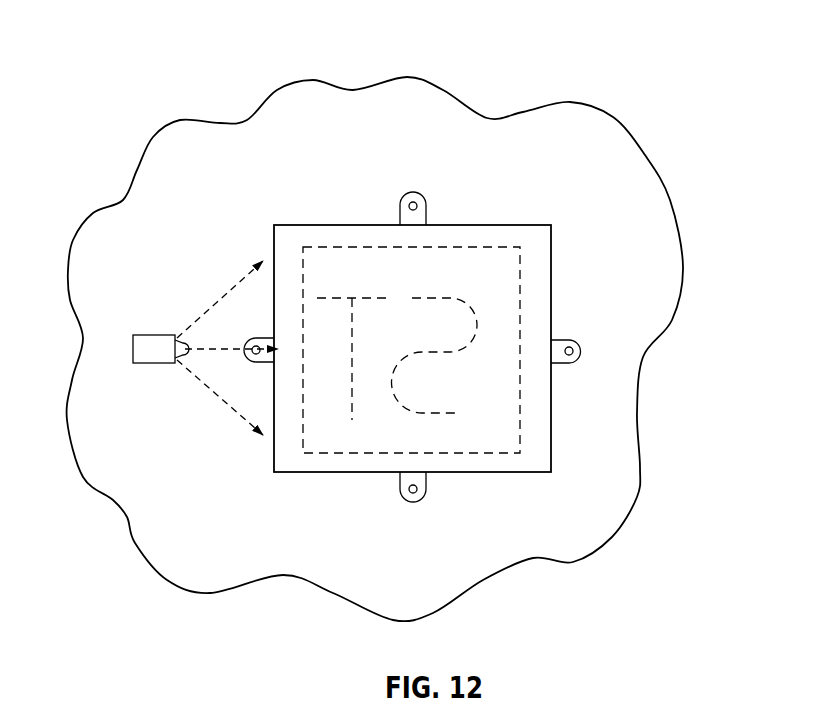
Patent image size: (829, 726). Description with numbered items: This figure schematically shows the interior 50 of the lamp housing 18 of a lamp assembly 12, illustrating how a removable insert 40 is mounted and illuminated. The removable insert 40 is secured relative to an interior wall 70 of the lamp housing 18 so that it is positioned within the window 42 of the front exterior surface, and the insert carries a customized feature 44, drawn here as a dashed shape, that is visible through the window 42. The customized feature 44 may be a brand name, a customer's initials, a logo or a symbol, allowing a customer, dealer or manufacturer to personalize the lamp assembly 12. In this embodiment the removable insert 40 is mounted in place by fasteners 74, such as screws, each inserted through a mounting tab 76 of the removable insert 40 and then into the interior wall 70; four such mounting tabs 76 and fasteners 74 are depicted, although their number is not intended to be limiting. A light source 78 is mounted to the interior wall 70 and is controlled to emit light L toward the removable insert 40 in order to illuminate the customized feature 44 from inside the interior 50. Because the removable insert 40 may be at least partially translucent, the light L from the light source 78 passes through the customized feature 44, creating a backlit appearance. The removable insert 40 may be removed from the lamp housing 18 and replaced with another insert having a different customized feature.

The lamp assembly 12 is at (668, 58).
The lamp housing 18 is at (508, 123).
The removable insert 40 is at (552, 262).
The window 42 is at (520, 428).
The customized feature 44 is at (360, 296).
The interior 50 is at (614, 192).
The interior wall 70 is at (140, 515).
The fastener 74 is at (422, 206).
The mounting tab 76 is at (410, 196).
The light source 78 is at (153, 343).
The light L is at (216, 394).